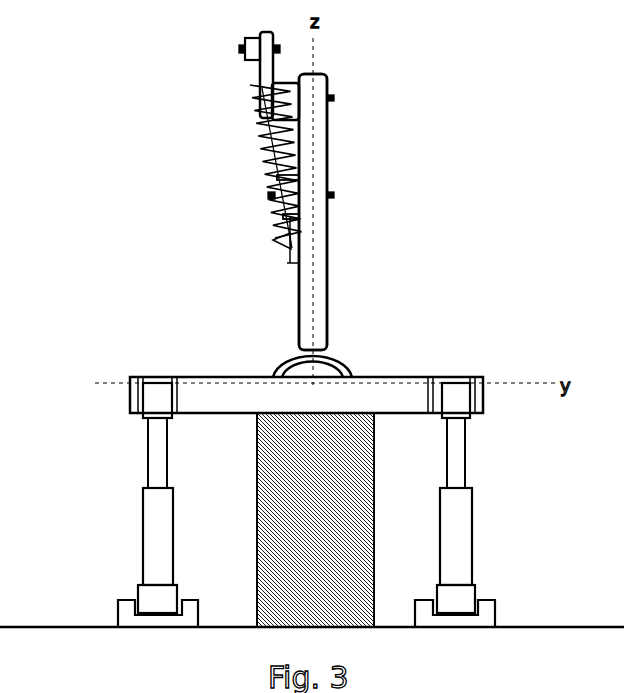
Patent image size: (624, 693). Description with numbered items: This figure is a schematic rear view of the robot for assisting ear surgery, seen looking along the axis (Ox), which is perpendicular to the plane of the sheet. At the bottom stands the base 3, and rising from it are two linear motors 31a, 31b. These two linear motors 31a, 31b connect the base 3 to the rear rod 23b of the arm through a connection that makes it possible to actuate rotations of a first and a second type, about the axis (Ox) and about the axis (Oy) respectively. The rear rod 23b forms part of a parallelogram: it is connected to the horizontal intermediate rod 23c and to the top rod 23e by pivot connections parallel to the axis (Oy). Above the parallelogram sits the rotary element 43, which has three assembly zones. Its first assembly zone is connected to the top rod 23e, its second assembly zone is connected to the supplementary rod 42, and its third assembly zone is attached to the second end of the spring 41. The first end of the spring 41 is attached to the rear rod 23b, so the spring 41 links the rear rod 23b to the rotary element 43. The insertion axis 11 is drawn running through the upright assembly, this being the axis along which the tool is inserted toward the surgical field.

The base 3 is at (66, 627).
The insertion axis 11 is at (312, 255).
The rear rod 23b is at (312, 302).
The horizontal intermediate rod 23c is at (290, 185).
The top rod 23e is at (292, 95).
The linear motor 31a is at (147, 470).
The linear motor 31b is at (466, 465).
The spring 41 is at (290, 182).
The supplementary rod 42 is at (252, 46).
The rotary element 43 is at (265, 68).